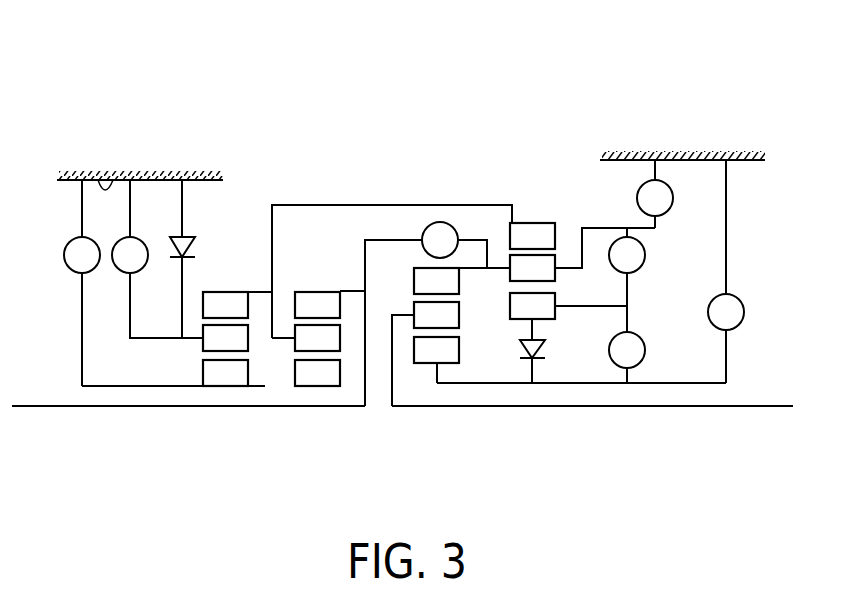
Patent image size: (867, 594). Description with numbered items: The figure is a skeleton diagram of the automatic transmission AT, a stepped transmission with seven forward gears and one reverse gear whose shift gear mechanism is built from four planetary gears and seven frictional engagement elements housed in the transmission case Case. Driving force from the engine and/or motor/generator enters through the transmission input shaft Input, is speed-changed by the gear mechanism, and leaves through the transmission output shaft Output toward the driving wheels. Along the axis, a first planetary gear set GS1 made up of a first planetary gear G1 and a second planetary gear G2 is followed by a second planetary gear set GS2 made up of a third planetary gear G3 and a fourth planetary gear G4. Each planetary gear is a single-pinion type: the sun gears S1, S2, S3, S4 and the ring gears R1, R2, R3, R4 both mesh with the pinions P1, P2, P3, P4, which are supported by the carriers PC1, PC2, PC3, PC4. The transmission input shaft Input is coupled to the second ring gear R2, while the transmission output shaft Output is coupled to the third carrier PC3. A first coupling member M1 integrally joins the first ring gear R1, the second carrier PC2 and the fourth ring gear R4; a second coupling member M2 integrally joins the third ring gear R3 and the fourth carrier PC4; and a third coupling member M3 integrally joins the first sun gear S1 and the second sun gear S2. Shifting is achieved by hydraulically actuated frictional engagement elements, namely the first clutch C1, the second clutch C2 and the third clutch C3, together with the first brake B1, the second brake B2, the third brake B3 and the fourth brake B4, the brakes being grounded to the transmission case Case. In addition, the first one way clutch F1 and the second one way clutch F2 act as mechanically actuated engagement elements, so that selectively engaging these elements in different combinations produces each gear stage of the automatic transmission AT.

The automatic transmission AT is at (418, 60).
The transmission case Case is at (114, 178).
The first brake B1 is at (157, 259).
The second brake B2 is at (726, 271).
The third brake B3 is at (82, 283).
The fourth brake B4 is at (655, 194).
The first clutch C1 is at (426, 314).
The second clutch C2 is at (627, 280).
The third clutch C3 is at (627, 357).
The first one way clutch F1 is at (197, 232).
The second one way clutch F2 is at (549, 354).
The first coupling member M1 is at (404, 205).
The second coupling member M2 is at (473, 268).
The third coupling member M3 is at (265, 386).
The first ring gear R1 is at (237, 305).
The second ring gear R2 is at (330, 304).
The third ring gear R3 is at (436, 281).
The fourth ring gear R4 is at (532, 236).
The first pinion P1 is at (225, 338).
The second pinion P2 is at (317, 338).
The third pinion P3 is at (425, 354).
The fourth pinion P4 is at (582, 254).
The first sun gear S1 is at (225, 373).
The second sun gear S2 is at (317, 373).
The third sun gear S3 is at (436, 360).
The fourth sun gear S4 is at (568, 316).
The first carrier PC1 is at (193, 340).
The second carrier PC2 is at (283, 341).
The third carrier PC3 is at (405, 313).
The fourth carrier PC4 is at (558, 276).
The first planetary gear G1 is at (252, 426).
The second planetary gear G2 is at (292, 426).
The third planetary gear G3 is at (412, 426).
The fourth planetary gear G4 is at (507, 426).
The first planetary gear set GS1 is at (337, 458).
The second planetary gear set GS2 is at (557, 458).
The transmission input shaft Input is at (58, 406).
The transmission output shaft Output is at (662, 406).